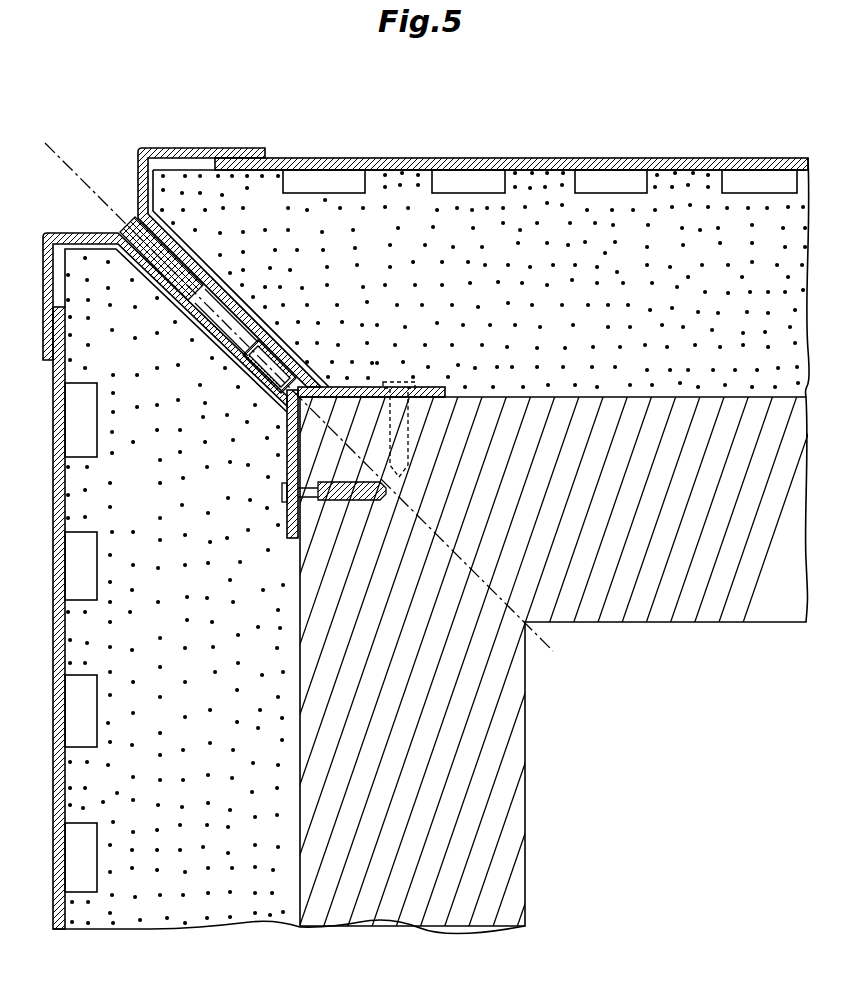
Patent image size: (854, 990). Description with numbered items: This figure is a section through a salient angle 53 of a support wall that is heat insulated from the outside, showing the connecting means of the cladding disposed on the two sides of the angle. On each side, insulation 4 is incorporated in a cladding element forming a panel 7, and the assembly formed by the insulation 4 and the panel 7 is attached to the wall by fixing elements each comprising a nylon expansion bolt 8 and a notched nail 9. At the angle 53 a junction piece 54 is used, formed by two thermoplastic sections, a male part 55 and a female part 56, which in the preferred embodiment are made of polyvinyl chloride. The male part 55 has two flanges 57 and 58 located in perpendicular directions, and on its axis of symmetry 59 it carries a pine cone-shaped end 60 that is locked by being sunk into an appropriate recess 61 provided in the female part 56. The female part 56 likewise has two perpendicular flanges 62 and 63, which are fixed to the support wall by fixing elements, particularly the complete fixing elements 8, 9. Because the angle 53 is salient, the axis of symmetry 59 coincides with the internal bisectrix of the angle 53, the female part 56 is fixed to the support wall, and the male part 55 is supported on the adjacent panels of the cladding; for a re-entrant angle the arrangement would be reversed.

The insulation 4 is at (743, 238).
The panel 7 is at (662, 162).
The nylon expansion bolt 8 is at (360, 500).
The notched nail 9 is at (283, 490).
The salient angle 53 is at (305, 408).
The junction piece 54 is at (98, 185).
The male part 55 is at (133, 233).
The female part 56 is at (312, 385).
The flange 57 is at (43, 275).
The flange 58 is at (192, 153).
The axis of symmetry 59 is at (62, 157).
The pine cone-shaped end 60 is at (182, 252).
The recess 61 is at (188, 268).
The flange 62 is at (290, 464).
The flange 63 is at (427, 387).